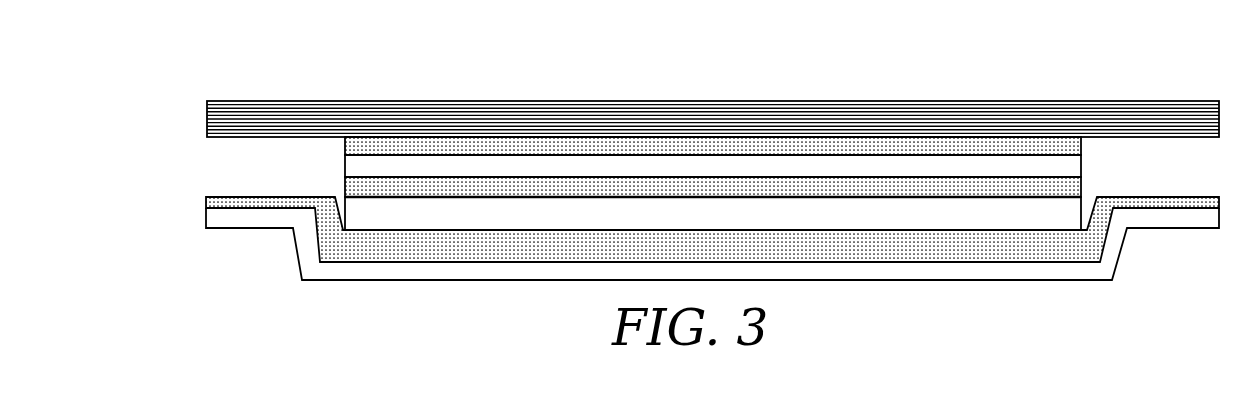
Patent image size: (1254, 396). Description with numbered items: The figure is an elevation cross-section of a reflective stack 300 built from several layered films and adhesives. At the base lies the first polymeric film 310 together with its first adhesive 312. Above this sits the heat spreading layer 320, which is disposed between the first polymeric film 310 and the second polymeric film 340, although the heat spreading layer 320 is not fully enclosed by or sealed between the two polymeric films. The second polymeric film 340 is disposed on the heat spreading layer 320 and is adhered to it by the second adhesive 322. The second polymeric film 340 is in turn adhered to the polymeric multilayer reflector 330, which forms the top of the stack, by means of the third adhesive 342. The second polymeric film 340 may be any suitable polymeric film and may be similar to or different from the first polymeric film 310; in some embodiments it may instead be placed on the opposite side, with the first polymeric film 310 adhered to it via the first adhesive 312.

The reflective stack 300 is at (230, 31).
The first polymeric film 310 is at (949, 270).
The first adhesive 312 is at (1028, 247).
The heat spreading layer 320 is at (1055, 215).
The second adhesive 322 is at (355, 185).
The polymeric multilayer reflector 330 is at (207, 101).
The second polymeric film 340 is at (355, 164).
The third adhesive 342 is at (1065, 145).